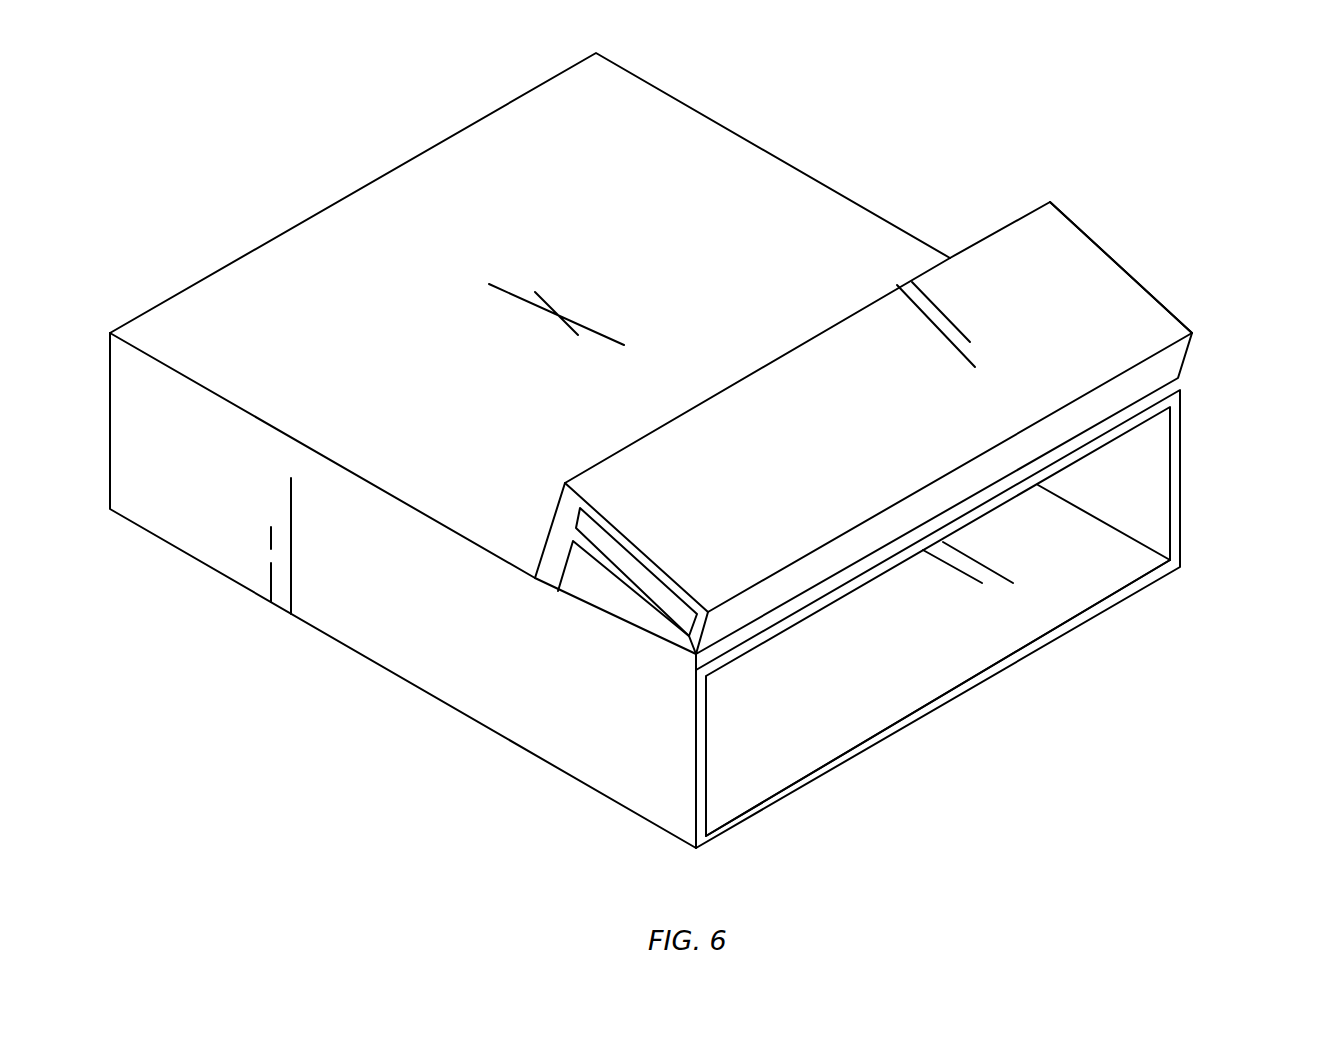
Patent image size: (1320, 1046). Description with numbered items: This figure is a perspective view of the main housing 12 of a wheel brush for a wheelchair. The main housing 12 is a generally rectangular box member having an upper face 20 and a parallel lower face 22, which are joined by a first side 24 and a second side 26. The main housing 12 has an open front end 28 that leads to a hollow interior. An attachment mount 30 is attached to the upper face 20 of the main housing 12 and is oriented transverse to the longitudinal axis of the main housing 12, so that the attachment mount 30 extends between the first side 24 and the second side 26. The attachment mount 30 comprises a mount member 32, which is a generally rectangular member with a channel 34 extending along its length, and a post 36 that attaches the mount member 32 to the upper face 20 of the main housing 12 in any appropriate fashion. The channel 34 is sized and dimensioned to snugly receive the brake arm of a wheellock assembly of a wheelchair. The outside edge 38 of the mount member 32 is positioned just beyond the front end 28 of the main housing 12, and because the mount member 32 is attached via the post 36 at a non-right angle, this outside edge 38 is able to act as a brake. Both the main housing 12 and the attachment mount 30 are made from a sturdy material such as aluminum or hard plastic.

The main housing 12 is at (779, 203).
The upper face 20 is at (512, 322).
The lower face 22 is at (867, 690).
The first side 24 is at (1152, 463).
The second side 26 is at (482, 693).
The open front end 28 is at (1135, 587).
The attachment mount 30 is at (1063, 265).
The mount member 32 is at (1133, 307).
The channel 34 is at (674, 608).
The post 36 is at (556, 558).
The outside edge 38 is at (1170, 362).